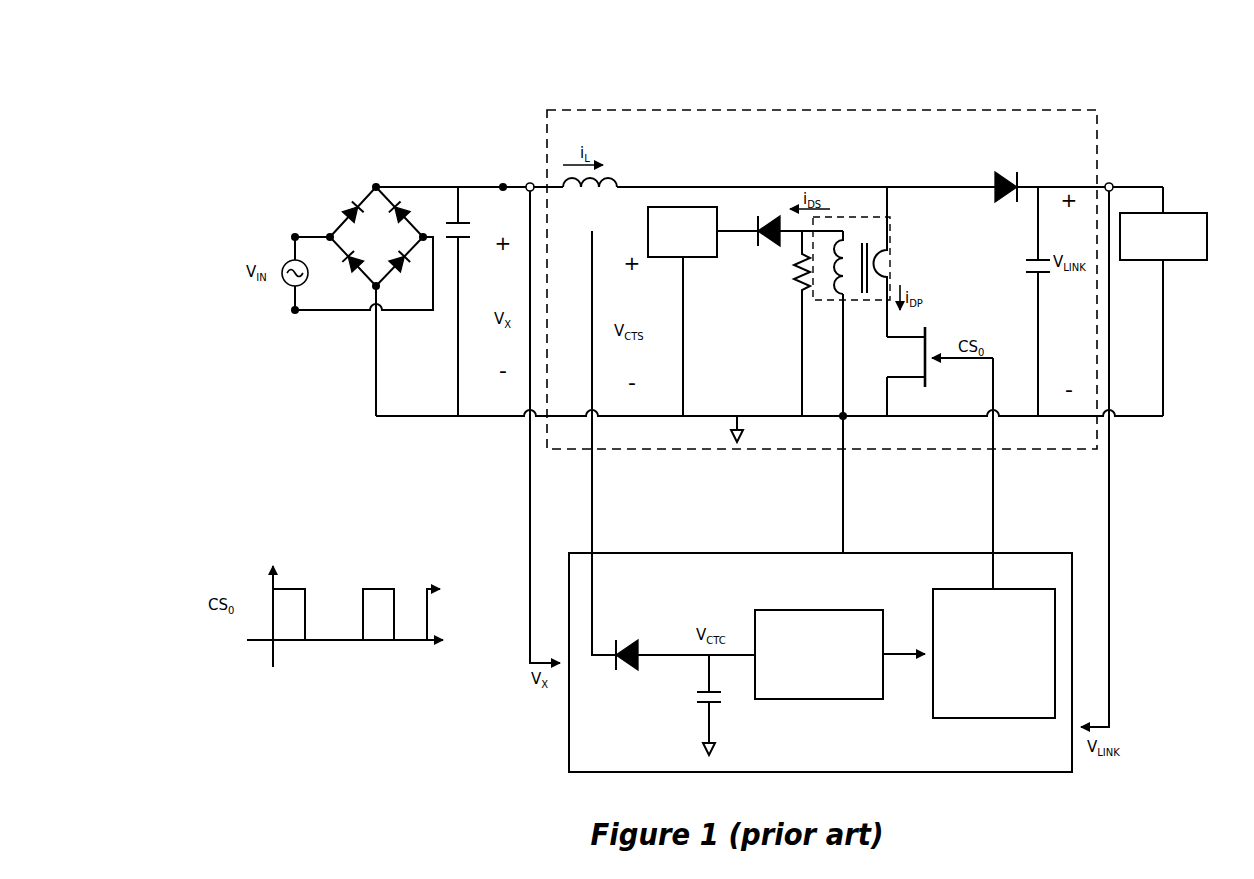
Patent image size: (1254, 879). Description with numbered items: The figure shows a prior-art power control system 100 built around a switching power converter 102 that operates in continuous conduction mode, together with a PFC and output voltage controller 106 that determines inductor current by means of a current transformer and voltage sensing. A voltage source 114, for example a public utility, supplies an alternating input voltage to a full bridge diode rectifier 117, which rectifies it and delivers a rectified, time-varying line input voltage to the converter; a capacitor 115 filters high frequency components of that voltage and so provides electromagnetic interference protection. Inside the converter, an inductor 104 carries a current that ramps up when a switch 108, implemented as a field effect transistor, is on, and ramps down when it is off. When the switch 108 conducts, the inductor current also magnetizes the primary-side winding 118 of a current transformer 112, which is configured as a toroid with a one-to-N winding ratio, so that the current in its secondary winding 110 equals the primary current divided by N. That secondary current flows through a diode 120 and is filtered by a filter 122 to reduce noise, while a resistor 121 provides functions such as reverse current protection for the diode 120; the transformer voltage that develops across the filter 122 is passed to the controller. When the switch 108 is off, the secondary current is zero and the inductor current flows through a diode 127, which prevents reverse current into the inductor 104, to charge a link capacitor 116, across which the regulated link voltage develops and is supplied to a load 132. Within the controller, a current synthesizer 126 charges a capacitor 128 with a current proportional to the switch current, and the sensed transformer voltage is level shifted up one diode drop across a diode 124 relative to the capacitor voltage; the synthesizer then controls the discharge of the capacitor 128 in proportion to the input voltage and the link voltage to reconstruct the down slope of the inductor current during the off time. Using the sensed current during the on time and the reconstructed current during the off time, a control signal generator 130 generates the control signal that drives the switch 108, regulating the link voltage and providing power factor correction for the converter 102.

The power control system 100 is at (998, 90).
The switching power converter 102 is at (575, 110).
The inductor 104 is at (574, 190).
The PFC and output voltage controller 106 is at (885, 553).
The switch 108 is at (908, 378).
The secondary winding 110 is at (843, 294).
The current transformer 112 is at (873, 216).
The voltage source 114 is at (284, 286).
The capacitor 115 is at (456, 221).
The link capacitor 116 is at (1036, 259).
The full bridge diode rectifier 117 is at (376, 236).
The primary-side winding 118 is at (886, 268).
The diode 120 is at (772, 236).
The resistor 121 is at (799, 290).
The filter 122 is at (682, 232).
The diode 124 is at (639, 650).
The current synthesizer 126 is at (840, 654).
The diode 127 is at (1007, 173).
The capacitor 128 is at (702, 702).
The control signal generator 130 is at (994, 653).
The load 132 is at (1174, 212).